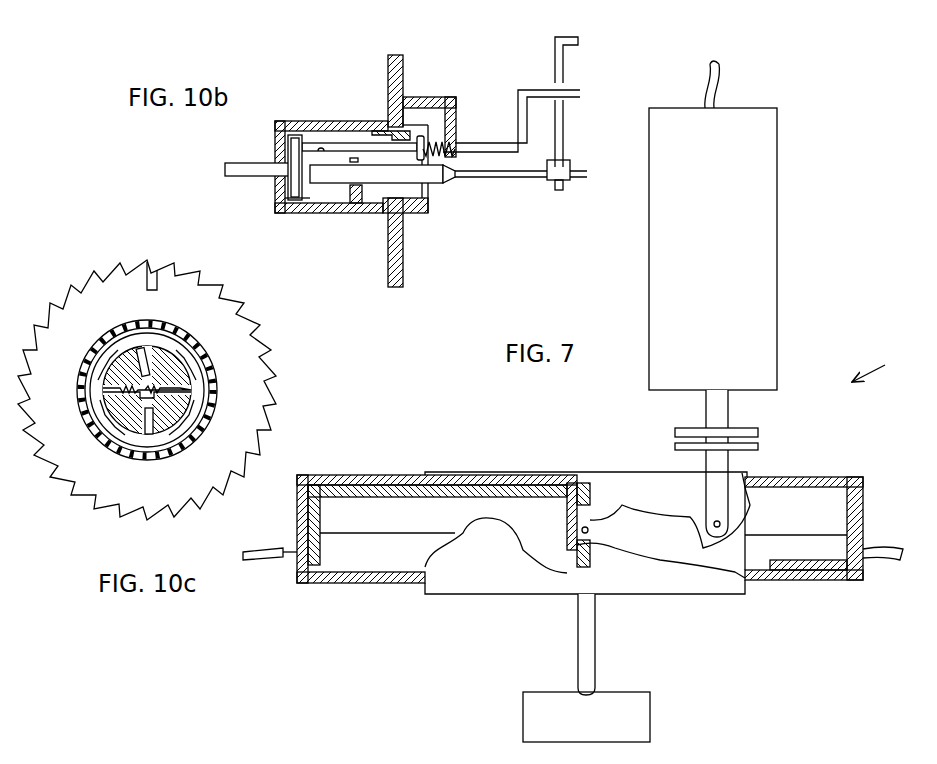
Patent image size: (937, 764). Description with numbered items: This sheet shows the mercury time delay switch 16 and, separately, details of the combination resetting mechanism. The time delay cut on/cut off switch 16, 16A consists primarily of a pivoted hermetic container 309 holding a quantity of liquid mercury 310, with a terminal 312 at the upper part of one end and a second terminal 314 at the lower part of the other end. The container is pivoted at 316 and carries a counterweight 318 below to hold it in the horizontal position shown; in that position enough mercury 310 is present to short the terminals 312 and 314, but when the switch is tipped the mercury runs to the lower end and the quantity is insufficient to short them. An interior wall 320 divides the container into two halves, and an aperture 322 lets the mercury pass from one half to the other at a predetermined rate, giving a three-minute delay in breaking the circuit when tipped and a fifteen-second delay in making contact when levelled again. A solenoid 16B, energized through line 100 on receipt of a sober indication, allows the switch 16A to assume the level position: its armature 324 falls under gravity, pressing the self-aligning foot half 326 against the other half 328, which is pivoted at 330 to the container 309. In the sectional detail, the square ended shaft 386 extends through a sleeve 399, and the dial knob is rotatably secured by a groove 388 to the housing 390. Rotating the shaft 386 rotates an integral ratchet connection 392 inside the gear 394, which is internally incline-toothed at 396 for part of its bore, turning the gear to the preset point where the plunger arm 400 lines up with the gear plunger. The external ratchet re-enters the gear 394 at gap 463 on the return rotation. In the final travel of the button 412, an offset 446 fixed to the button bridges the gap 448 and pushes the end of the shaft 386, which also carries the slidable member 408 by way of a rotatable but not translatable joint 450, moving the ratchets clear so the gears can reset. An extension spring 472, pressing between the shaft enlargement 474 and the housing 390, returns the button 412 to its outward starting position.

In FIG. 7, the time delay cut on/cut off switch 16 is at (876, 365).
In FIG. 7, the time delay switch 16A is at (297, 527).
In FIG. 7, the solenoid 16B is at (780, 228).
In FIG. 7, the line 100 is at (722, 68).
In FIG. 7, the pivoted hermetic container 309 is at (400, 583).
In FIG. 7, the liquid mercury 310 is at (800, 540).
In FIG. 7, the terminal 312 is at (320, 583).
In FIG. 7, the second terminal 314 is at (868, 570).
In FIG. 7, the pivot 316 is at (585, 527).
In FIG. 7, the counterweight 318 is at (636, 720).
In FIG. 7, the interior wall 320 is at (560, 575).
In FIG. 7, the aperture 322 is at (612, 575).
In FIG. 7, the armature 324 is at (730, 408).
In FIG. 7, the self-aligning foot half 326 is at (758, 432).
In FIG. 7, the other half 328 is at (758, 446).
In FIG. 7, the pivot 330 is at (716, 521).
In FIG. 10b, the square ended shaft 386 is at (328, 180).
In FIG. 10b, the groove 388 is at (408, 213).
In FIG. 10b, the housing 390 is at (405, 263).
In FIG. 10c, the integral ratchet connection 392 is at (147, 327).
In FIG. 10c, the gear 394 is at (100, 497).
In FIG. 10c, the internal incline teeth 396 is at (160, 332).
In FIG. 10b, the sleeve 399 is at (373, 213).
In FIG. 10b, the plunger arm 400 is at (320, 143).
In FIG. 10b, the slidable member 408 is at (558, 36).
In FIG. 10b, the button 412 is at (250, 162).
In FIG. 10b, the offset 446 is at (290, 183).
In FIG. 10b, the gap 448 is at (307, 180).
In FIG. 10b, the rotatable but not translatable joint 450 is at (568, 172).
In FIG. 10c, the gap 463 is at (160, 290).
In FIG. 10b, the extension spring 472 is at (432, 137).
In FIG. 10b, the shaft enlargement 474 is at (375, 128).